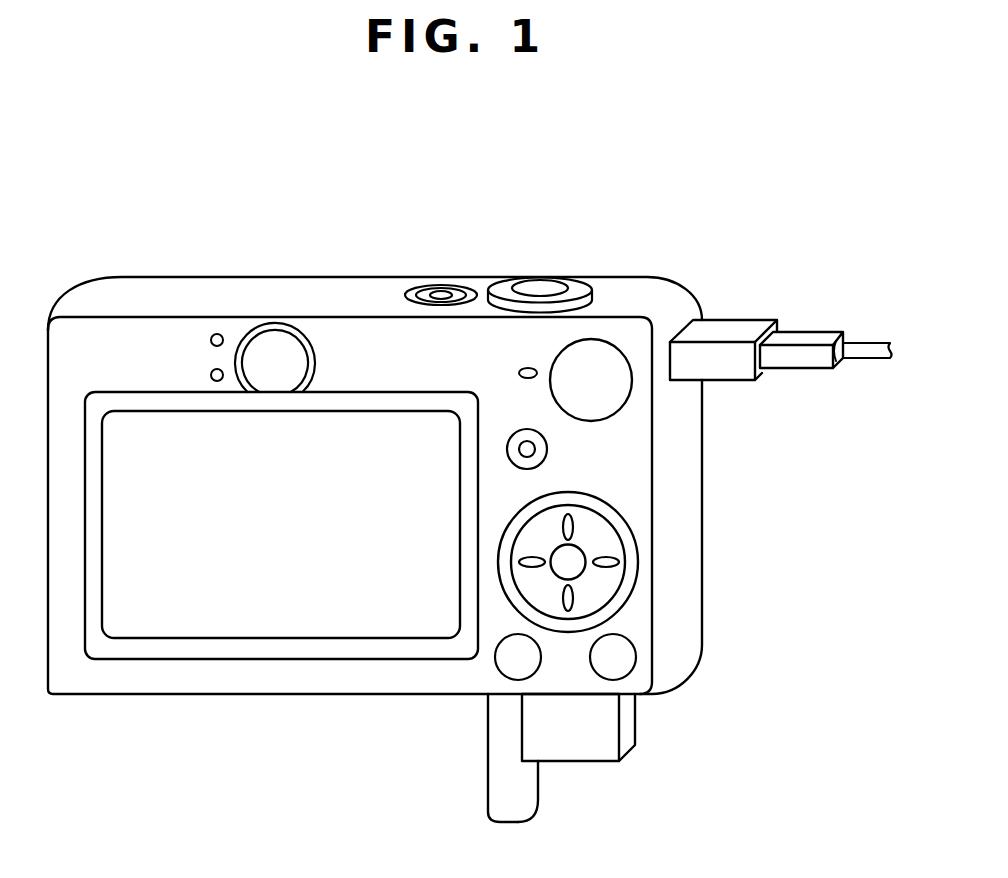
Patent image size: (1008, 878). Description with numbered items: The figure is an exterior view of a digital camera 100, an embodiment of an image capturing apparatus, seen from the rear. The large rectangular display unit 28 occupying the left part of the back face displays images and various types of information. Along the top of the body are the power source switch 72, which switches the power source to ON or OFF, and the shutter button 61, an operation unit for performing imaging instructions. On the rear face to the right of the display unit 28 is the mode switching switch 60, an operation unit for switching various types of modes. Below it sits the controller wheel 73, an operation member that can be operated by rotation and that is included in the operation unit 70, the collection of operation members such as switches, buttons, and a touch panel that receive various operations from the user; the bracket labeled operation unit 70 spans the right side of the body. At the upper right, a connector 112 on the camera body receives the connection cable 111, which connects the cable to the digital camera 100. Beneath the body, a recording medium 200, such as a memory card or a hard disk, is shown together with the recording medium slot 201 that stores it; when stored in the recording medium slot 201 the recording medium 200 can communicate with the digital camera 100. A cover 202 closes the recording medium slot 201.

The digital camera 100 is at (140, 706).
The display unit 28 is at (168, 433).
The power source switch 72 is at (443, 288).
The shutter button 61 is at (538, 287).
The mode switching switch 60 is at (597, 352).
The controller wheel 73 is at (517, 517).
The operation unit 70 is at (781, 450).
The connector 112 is at (737, 325).
The connection cable 111 is at (826, 309).
The recording medium 200 is at (600, 728).
The recording medium slot 201 is at (540, 695).
The cover 202 is at (543, 800).